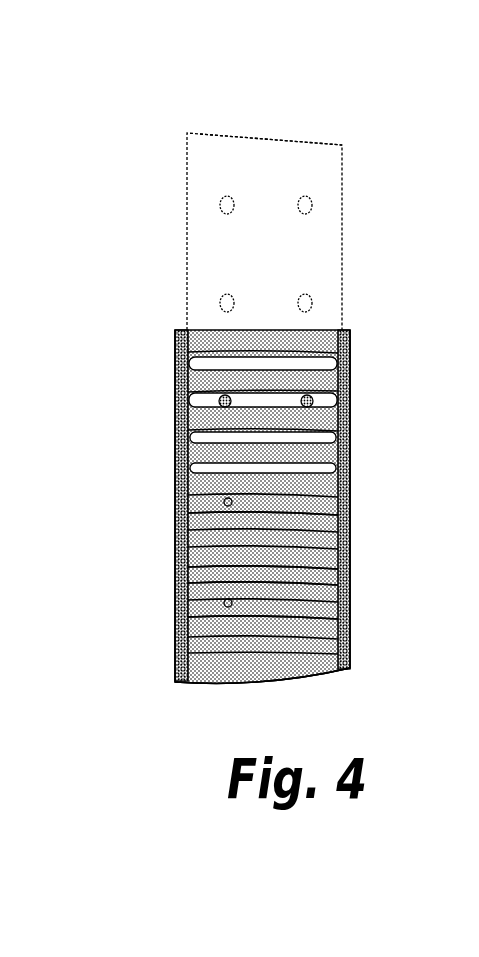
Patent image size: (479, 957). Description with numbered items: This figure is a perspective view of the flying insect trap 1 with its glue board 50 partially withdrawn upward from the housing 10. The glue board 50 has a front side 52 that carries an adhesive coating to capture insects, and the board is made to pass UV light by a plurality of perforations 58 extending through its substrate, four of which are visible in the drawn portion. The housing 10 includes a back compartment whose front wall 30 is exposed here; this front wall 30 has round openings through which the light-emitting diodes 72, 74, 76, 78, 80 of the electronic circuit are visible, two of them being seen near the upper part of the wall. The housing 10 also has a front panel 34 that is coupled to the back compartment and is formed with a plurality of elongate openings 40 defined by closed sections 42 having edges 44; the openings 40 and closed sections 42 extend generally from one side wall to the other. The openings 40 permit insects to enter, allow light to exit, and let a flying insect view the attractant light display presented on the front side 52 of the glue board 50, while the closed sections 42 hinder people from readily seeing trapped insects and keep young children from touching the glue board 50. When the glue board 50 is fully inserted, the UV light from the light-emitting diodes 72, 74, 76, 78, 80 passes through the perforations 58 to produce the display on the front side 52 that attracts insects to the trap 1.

The flying insect trap 1 is at (153, 357).
The housing 10 is at (152, 698).
The front wall 30 is at (202, 635).
The front panel 34 is at (323, 652).
The openings 40 is at (210, 572).
The closed sections 42 is at (298, 620).
The edges 44 is at (312, 573).
The glue board 50 is at (265, 128).
The front side 52 is at (298, 178).
The perforations 58 is at (225, 207).
The light-emitting diode 72 is at (228, 603).
The light-emitting diode 74 is at (228, 502).
The light-emitting diode 76 is at (225, 402).
The light-emitting diode 78 is at (307, 403).
The light-emitting diode 80 is at (307, 500).